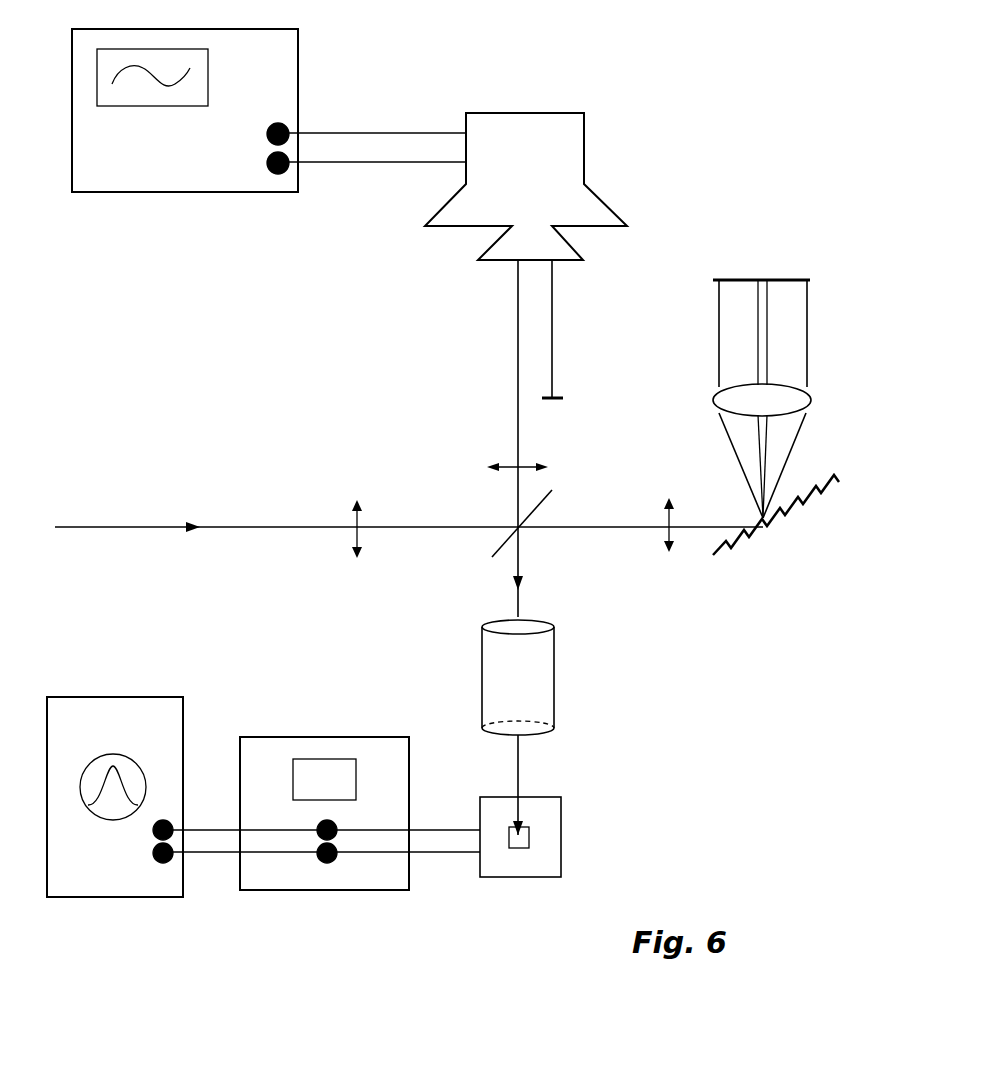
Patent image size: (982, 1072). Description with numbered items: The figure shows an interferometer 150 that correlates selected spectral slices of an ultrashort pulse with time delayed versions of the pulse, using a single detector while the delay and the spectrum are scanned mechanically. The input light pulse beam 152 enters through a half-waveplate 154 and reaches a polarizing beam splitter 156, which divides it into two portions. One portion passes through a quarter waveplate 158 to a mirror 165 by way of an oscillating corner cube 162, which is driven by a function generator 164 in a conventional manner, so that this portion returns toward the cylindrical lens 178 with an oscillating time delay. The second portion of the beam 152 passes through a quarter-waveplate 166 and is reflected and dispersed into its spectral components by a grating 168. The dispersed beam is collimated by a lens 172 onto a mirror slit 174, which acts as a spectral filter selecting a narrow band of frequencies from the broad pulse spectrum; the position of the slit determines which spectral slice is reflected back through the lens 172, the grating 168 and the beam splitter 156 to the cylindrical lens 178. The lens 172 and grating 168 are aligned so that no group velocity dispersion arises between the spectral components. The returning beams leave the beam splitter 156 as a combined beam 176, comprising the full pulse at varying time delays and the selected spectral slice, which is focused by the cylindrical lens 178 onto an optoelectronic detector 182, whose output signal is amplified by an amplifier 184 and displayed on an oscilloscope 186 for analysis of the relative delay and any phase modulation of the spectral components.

The interferometer 150 is at (778, 123).
The input light pulse beam 152 is at (127, 530).
The half-waveplate 154 is at (337, 530).
The polarizing beam splitter 156 is at (490, 547).
The quarter waveplate 158 is at (517, 333).
The oscillating corner cube 162 is at (595, 200).
The function generator 164 is at (200, 180).
The mirror 165 is at (552, 400).
The quarter-waveplate 166 is at (583, 528).
The grating 168 is at (732, 545).
The lens 172 is at (790, 393).
The mirror slit 174 is at (783, 280).
The reflected light beam 176 is at (523, 603).
The cylindrical lens 178 is at (554, 702).
The optoelectronic detector 182 is at (563, 815).
The amplifier 184 is at (365, 892).
The oscilloscope 186 is at (135, 898).